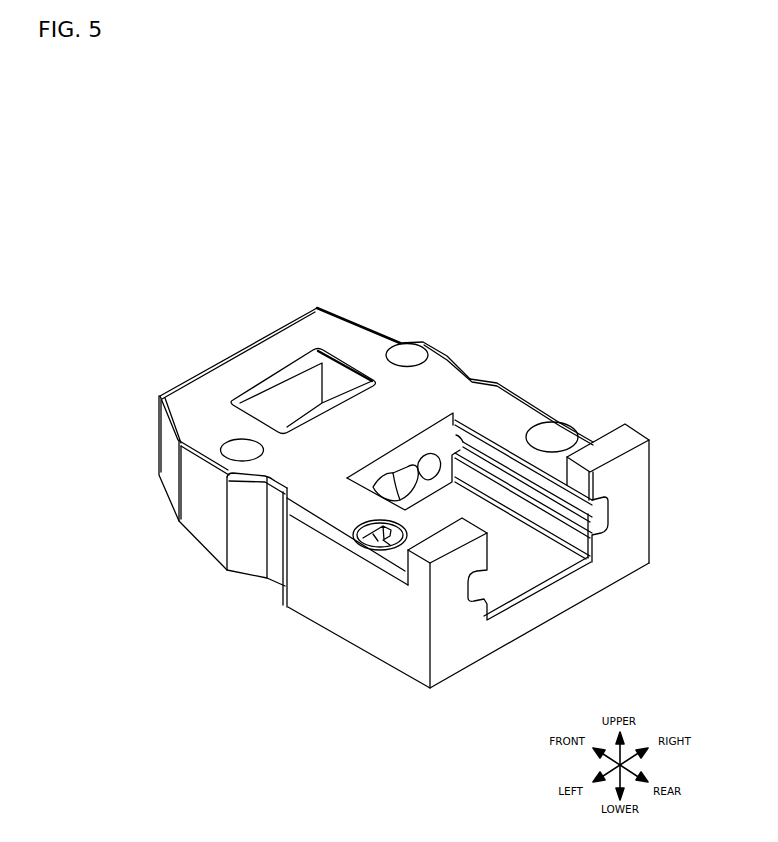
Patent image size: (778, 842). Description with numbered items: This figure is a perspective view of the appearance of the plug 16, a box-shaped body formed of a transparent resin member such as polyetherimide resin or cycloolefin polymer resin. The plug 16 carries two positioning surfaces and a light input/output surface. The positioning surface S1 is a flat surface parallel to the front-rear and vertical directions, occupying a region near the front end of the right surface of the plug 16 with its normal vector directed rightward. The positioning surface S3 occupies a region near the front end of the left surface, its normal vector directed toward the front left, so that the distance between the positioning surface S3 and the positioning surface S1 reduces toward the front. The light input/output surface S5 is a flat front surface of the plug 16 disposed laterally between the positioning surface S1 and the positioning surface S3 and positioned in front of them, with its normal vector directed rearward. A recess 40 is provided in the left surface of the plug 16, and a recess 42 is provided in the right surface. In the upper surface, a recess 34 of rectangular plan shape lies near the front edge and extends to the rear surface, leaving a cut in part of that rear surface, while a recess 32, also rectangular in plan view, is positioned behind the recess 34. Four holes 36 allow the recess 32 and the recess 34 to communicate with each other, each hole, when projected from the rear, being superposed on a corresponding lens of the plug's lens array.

The plug 16 is at (225, 211).
The recess 34 is at (332, 388).
The positioning surface S1 is at (380, 315).
The light input/output surface S5 is at (238, 352).
The holes 36 is at (460, 478).
The recess 42 is at (466, 381).
The recess 32 is at (516, 521).
The positioning surface S3 is at (172, 473).
The recess 40 is at (278, 545).